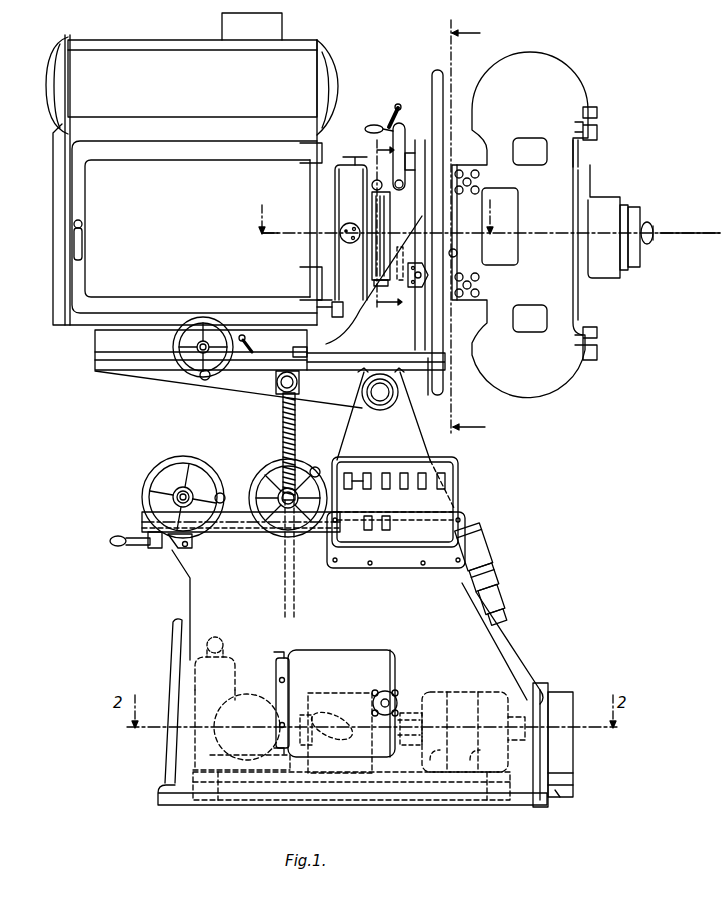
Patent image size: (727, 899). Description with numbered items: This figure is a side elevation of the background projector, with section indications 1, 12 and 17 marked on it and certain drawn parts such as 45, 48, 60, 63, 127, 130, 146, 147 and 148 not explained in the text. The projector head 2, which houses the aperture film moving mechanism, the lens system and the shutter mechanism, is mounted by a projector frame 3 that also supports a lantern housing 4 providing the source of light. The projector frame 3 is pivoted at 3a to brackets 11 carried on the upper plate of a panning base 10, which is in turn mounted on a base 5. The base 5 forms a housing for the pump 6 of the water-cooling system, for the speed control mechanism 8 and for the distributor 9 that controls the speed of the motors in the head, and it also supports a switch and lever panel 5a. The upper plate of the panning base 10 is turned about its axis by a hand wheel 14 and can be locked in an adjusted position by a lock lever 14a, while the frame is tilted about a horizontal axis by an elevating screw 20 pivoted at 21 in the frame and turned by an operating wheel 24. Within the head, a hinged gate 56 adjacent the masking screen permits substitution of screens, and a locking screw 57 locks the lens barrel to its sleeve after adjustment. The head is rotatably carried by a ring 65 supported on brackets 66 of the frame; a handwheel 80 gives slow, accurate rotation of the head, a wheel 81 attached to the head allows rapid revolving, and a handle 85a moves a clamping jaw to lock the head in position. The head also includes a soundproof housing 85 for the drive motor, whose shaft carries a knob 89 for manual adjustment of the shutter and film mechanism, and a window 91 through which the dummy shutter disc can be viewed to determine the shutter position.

The section line 1- 1 is at (474, 230).
The projector head 2 is at (574, 78).
The projector frame 3 is at (411, 363).
The pivot 3a is at (376, 398).
The lantern housing 4 is at (98, 42).
The base 5 is at (484, 652).
The switch and lever panel 5a is at (415, 553).
The pump 6 is at (200, 753).
The speed control mechanism 8 is at (354, 690).
The distributor 9 is at (432, 692).
The panning base 10 is at (236, 511).
The brackets 11 is at (352, 441).
The section line 12- 12 is at (378, 226).
The hand wheel 14 is at (142, 497).
The lock lever 14a is at (117, 548).
The section line 17- 17 is at (374, 232).
The elevating screw 20 is at (283, 424).
The pivot 21 is at (296, 387).
The operating wheel 24 is at (280, 530).
The base plate 45 is at (355, 795).
The spindle axis 48 is at (683, 234).
The hinged gate 56 is at (376, 257).
The locking screw 57 is at (371, 185).
The clamp bracket 60 is at (308, 149).
The lens disc 63 is at (341, 229).
The ring 65 is at (405, 121).
The brackets 66 is at (368, 343).
The handwheel 80 is at (372, 125).
The wheel 81 is at (445, 80).
The soundproof housing 85 is at (579, 158).
The handle 85a is at (398, 104).
The knob 89 is at (650, 222).
The window 91 is at (622, 240).
The guide roller 127 is at (458, 253).
The spindle housing 130 is at (594, 215).
The handwheel 146 is at (220, 312).
The tilting bed 147 is at (188, 371).
The carriage rail 148 is at (152, 328).